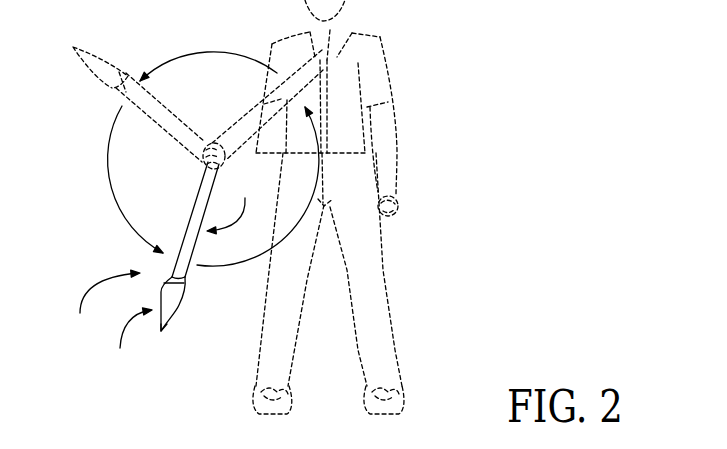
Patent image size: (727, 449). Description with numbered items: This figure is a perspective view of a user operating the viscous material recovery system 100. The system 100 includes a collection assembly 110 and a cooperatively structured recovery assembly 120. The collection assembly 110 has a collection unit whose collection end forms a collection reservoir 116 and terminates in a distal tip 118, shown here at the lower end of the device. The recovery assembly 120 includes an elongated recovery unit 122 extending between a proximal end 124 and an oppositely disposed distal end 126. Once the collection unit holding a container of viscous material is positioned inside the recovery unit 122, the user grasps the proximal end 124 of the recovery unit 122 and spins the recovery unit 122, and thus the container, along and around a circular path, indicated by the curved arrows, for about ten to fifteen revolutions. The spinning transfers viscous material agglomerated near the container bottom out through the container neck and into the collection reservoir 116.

The viscous material recovery system 100 is at (101, 309).
The collection assembly 110 is at (127, 343).
The collection reservoir 116 is at (176, 302).
The distal tip 118 is at (163, 332).
The recovery assembly 120 is at (237, 205).
The recovery unit 122 is at (191, 207).
The proximal end 124 is at (205, 170).
The distal end 126 is at (191, 274).